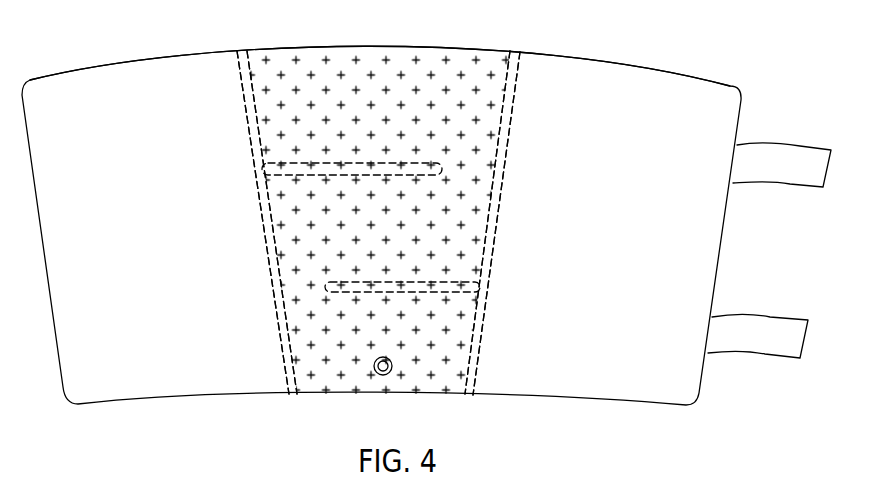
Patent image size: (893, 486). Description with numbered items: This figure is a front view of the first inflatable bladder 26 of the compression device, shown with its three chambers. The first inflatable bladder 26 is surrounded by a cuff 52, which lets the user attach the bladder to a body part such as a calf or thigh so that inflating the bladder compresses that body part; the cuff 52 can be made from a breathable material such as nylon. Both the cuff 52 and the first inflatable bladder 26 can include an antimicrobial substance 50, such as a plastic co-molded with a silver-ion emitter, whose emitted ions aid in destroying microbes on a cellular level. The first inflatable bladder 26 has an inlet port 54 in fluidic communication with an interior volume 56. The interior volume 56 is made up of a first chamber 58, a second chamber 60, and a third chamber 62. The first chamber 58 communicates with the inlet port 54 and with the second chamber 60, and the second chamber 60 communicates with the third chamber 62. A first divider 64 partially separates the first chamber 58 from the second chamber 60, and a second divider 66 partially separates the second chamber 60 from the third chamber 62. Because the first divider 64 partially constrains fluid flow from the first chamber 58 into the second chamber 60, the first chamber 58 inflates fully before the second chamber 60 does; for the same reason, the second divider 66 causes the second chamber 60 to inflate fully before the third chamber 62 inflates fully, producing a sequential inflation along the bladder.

The antimicrobial substance 50 is at (125, 90).
The cuff 52 is at (627, 62).
The interior volume 56 is at (396, 60).
The first chamber 58 is at (427, 342).
The second chamber 60 is at (290, 227).
The third chamber 62 is at (470, 107).
The first divider 64 is at (447, 282).
The second divider 66 is at (290, 165).
The inlet port 54 is at (373, 369).
The first inflatable bladder 26 is at (293, 347).